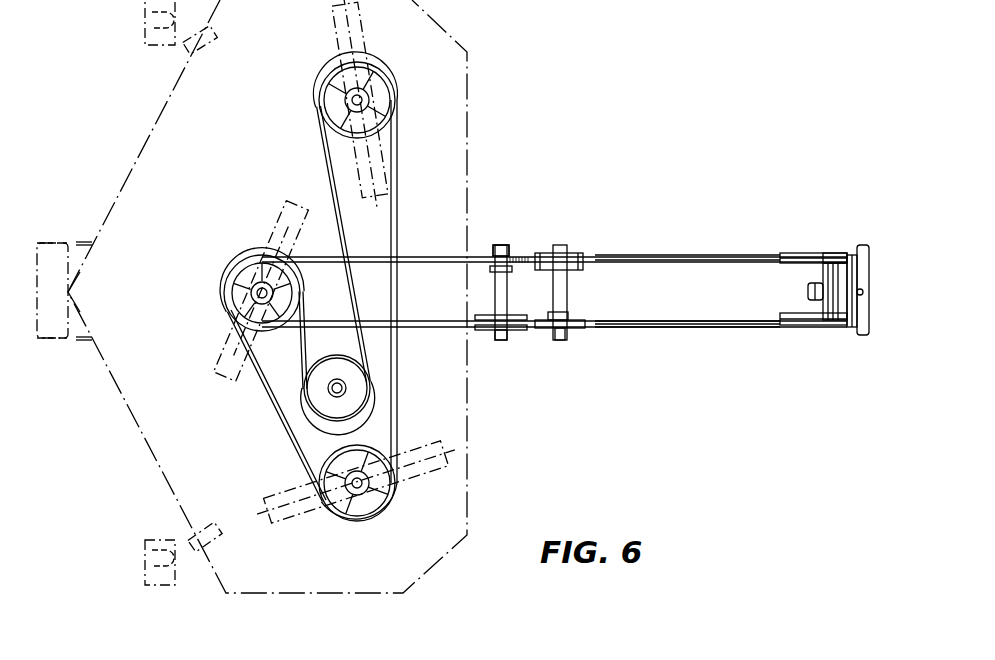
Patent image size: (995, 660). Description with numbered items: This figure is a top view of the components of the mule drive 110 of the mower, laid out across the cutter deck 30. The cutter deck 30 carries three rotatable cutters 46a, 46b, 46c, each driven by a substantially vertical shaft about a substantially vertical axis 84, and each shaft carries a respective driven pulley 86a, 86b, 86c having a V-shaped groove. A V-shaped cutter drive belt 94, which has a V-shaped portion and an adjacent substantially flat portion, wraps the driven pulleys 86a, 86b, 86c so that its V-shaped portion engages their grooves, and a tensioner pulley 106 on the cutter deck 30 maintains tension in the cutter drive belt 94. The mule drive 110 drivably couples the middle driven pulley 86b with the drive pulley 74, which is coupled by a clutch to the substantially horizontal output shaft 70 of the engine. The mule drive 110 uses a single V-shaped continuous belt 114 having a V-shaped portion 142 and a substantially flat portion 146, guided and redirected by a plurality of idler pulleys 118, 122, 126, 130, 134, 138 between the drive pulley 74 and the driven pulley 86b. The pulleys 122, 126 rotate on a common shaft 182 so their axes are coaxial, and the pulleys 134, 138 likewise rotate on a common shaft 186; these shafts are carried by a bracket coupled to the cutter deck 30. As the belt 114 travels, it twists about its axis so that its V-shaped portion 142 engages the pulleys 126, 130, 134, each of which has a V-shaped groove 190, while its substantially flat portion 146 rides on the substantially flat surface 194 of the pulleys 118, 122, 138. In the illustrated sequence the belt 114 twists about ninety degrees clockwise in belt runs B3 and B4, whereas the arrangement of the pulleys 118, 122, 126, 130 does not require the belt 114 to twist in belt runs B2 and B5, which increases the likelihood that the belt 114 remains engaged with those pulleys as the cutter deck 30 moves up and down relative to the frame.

The cutter deck 30 is at (311, 598).
The rotatable cutter 46a is at (296, 515).
The rotatable cutter 46b is at (226, 374).
The rotatable cutter 46c is at (340, 12).
The output shaft 70 is at (808, 291).
The drive pulley 74 is at (850, 337).
The substantially vertical axis 84 is at (419, 256).
The driven pulley 86a is at (392, 503).
The driven pulley 86b is at (228, 283).
The driven pulley 86c is at (390, 82).
The cutter drive belt 94 is at (291, 432).
The tensioner pulley 106 is at (335, 405).
The mule drive 110 is at (597, 393).
The continuous belt 114 is at (698, 328).
The idler pulley 118 is at (806, 253).
The idler pulley 122 is at (578, 254).
The idler pulley 126 is at (548, 338).
The idler pulley 130 is at (815, 327).
The idler pulley 134 is at (519, 253).
The idler pulley 138 is at (520, 334).
The V-shaped portion 142 is at (648, 328).
The substantially flat portion 146 is at (688, 261).
The common shaft 182 is at (569, 293).
The common shaft 186 is at (496, 289).
The V-shaped groove 190 is at (588, 328).
The substantially flat surface 194 is at (545, 251).
The belt run B2 is at (725, 333).
The belt run B3 is at (418, 328).
The belt run B4 is at (554, 259).
The belt run B5 is at (660, 257).